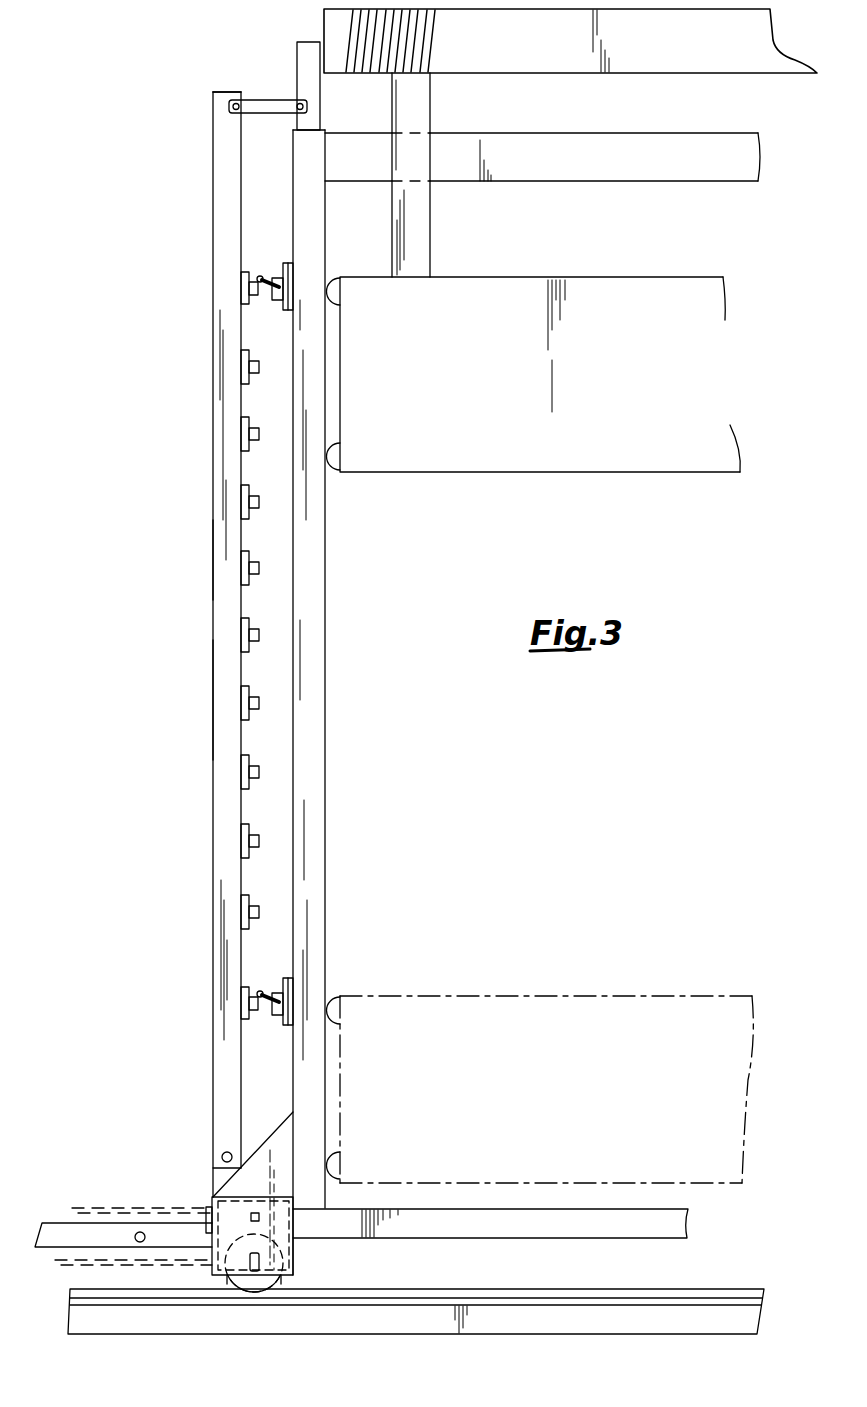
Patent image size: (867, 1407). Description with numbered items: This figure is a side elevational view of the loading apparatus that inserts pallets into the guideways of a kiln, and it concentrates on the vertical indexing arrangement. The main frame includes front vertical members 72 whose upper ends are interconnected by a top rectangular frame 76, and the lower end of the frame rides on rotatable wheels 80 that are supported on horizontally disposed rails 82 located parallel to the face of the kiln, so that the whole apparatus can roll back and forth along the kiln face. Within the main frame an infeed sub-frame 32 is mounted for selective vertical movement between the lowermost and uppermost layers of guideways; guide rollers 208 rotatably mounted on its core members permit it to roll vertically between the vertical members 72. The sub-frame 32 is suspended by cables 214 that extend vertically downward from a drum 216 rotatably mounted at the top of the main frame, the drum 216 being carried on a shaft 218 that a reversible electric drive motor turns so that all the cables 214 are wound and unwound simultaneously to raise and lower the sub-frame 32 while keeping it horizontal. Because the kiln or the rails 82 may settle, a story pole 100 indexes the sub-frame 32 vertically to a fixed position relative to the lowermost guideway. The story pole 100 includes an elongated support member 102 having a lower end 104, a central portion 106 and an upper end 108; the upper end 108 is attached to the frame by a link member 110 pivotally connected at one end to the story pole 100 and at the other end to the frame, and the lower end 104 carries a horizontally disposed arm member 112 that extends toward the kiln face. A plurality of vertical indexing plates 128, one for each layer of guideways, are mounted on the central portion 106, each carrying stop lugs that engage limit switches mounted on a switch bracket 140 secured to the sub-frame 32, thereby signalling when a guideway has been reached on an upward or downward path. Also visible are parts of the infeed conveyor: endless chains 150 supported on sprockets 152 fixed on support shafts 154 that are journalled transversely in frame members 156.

The sub-frame 32 is at (463, 472).
The front vertical member 72 is at (318, 606).
The top rectangular frame 76 is at (568, 163).
The rotatable wheel 80 is at (285, 1277).
The rail 82 is at (230, 1318).
The story pole 100 is at (205, 570).
The elongated support member 102 is at (213, 600).
The lower end 104 is at (213, 1168).
The central portion 106 is at (222, 688).
The upper end 108 is at (218, 97).
The link member 110 is at (272, 100).
The arm member 112 is at (221, 1153).
The vertical indexing plate 128 is at (245, 553).
The switch bracket 140 is at (290, 310).
The endless chain 150 is at (92, 1206).
The sprocket 152 is at (118, 1252).
The support shaft 154 is at (140, 1232).
The frame member 156 is at (80, 1235).
The guide roller 208 is at (340, 297).
The cable 214 is at (420, 237).
The drum 216 is at (521, 47).
The shaft 218 is at (316, 40).